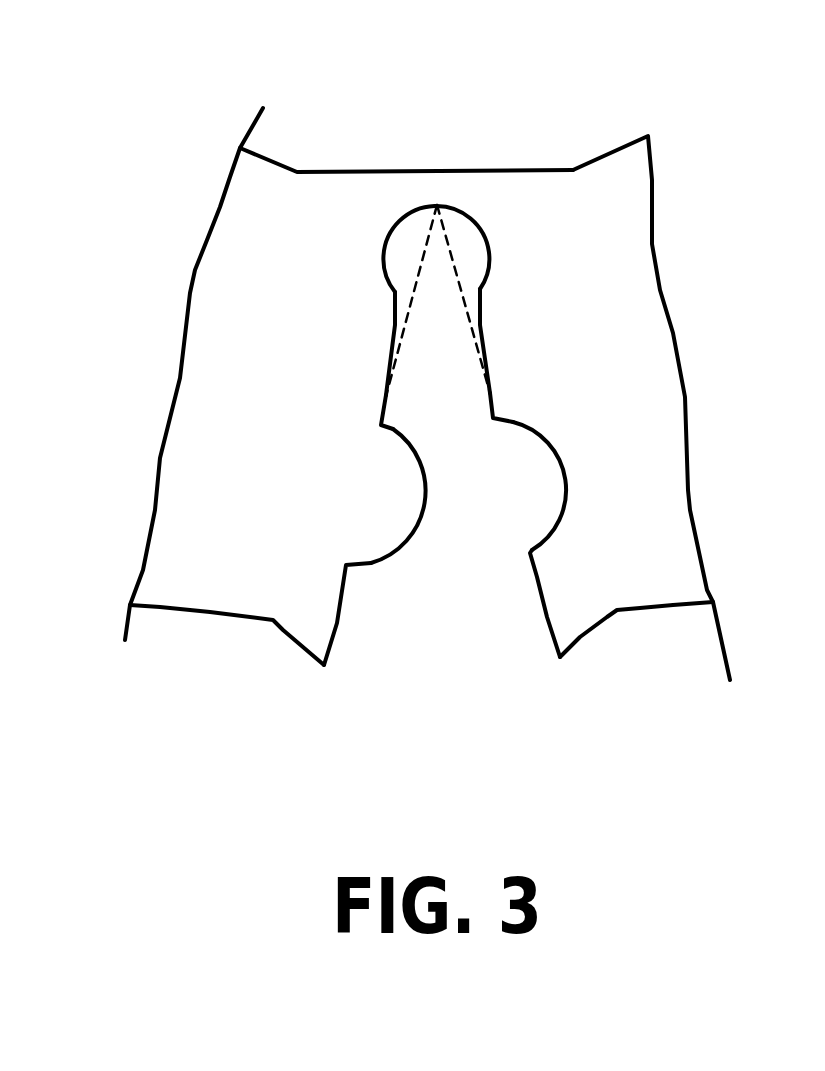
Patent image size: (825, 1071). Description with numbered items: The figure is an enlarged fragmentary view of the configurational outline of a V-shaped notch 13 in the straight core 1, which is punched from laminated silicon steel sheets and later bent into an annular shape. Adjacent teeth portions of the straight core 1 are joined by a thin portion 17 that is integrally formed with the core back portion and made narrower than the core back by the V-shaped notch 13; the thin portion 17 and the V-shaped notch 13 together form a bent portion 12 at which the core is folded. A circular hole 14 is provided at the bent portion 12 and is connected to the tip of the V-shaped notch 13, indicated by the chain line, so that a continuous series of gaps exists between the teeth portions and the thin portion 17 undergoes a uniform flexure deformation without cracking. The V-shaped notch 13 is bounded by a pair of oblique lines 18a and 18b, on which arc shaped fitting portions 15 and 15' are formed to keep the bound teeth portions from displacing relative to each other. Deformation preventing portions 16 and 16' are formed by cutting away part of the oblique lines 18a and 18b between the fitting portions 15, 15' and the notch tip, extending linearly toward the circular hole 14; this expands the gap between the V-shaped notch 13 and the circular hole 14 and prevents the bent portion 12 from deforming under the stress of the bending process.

The straight core 1 is at (310, 130).
The bent portion 12 is at (582, 217).
The V-shaped notch 13 is at (445, 598).
The circular hole 14 is at (483, 258).
The arc shaped fitting portion 15 is at (255, 496).
The arc shaped fitting portion 15' is at (656, 486).
The deformation preventing portion 16 is at (249, 334).
The deformation preventing portion 16' is at (639, 341).
The thin portion 17 is at (438, 188).
The oblique line 18a is at (388, 392).
The oblique line 18b is at (495, 390).